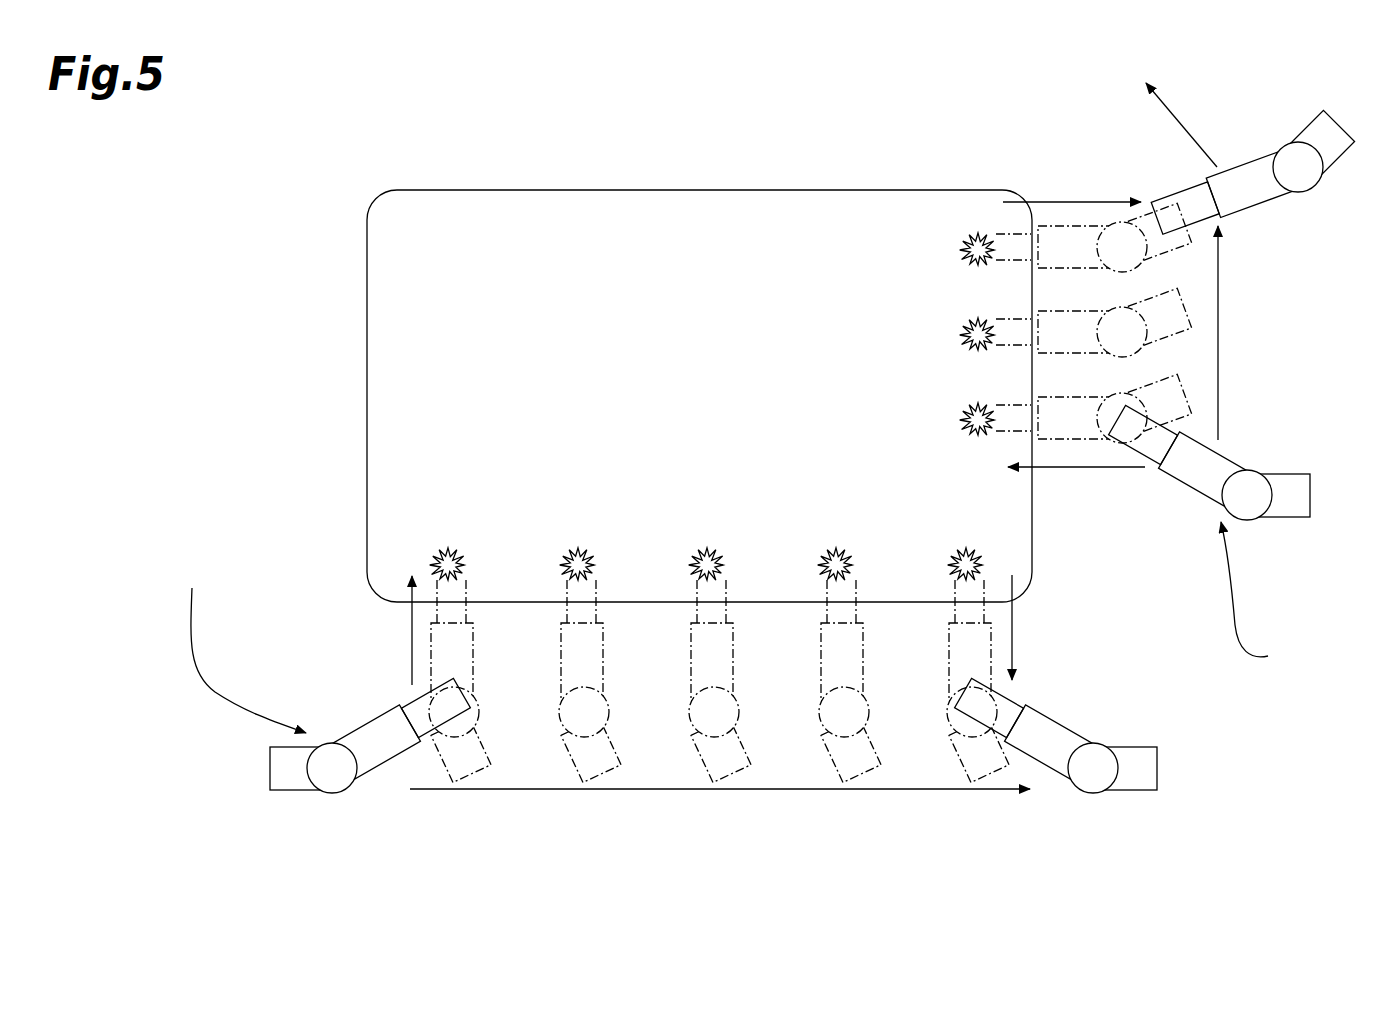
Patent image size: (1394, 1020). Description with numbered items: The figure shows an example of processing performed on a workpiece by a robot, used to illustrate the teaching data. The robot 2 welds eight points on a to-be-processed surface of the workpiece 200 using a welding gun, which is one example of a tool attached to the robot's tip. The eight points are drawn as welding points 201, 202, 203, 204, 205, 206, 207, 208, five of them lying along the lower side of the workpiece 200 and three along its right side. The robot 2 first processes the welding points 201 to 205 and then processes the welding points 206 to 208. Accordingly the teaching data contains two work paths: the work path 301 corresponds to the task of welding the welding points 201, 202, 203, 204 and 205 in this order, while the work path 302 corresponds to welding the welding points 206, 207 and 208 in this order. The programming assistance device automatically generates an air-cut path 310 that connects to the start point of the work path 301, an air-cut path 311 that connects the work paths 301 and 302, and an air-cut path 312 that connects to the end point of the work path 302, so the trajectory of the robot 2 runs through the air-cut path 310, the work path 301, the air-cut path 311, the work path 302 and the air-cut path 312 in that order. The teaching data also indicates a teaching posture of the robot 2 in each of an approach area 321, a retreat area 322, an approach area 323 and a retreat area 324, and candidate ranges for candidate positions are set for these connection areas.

The robot 2 is at (372, 776).
The workpiece 200 is at (444, 190).
The welding point 201 is at (447, 548).
The welding point 202 is at (578, 548).
The welding point 203 is at (707, 548).
The welding point 204 is at (835, 548).
The welding point 205 is at (965, 548).
The welding point 206 is at (960, 420).
The welding point 207 is at (960, 335).
The welding point 208 is at (960, 250).
The work path 301 is at (740, 792).
The work path 302 is at (1222, 336).
The air-cut path 310 is at (193, 686).
The air-cut path 311 is at (1270, 598).
The air-cut path 312 is at (1183, 122).
The approach area 321 is at (410, 637).
The retreat area 322 is at (1016, 637).
The approach area 323 is at (1080, 472).
The retreat area 324 is at (1080, 200).